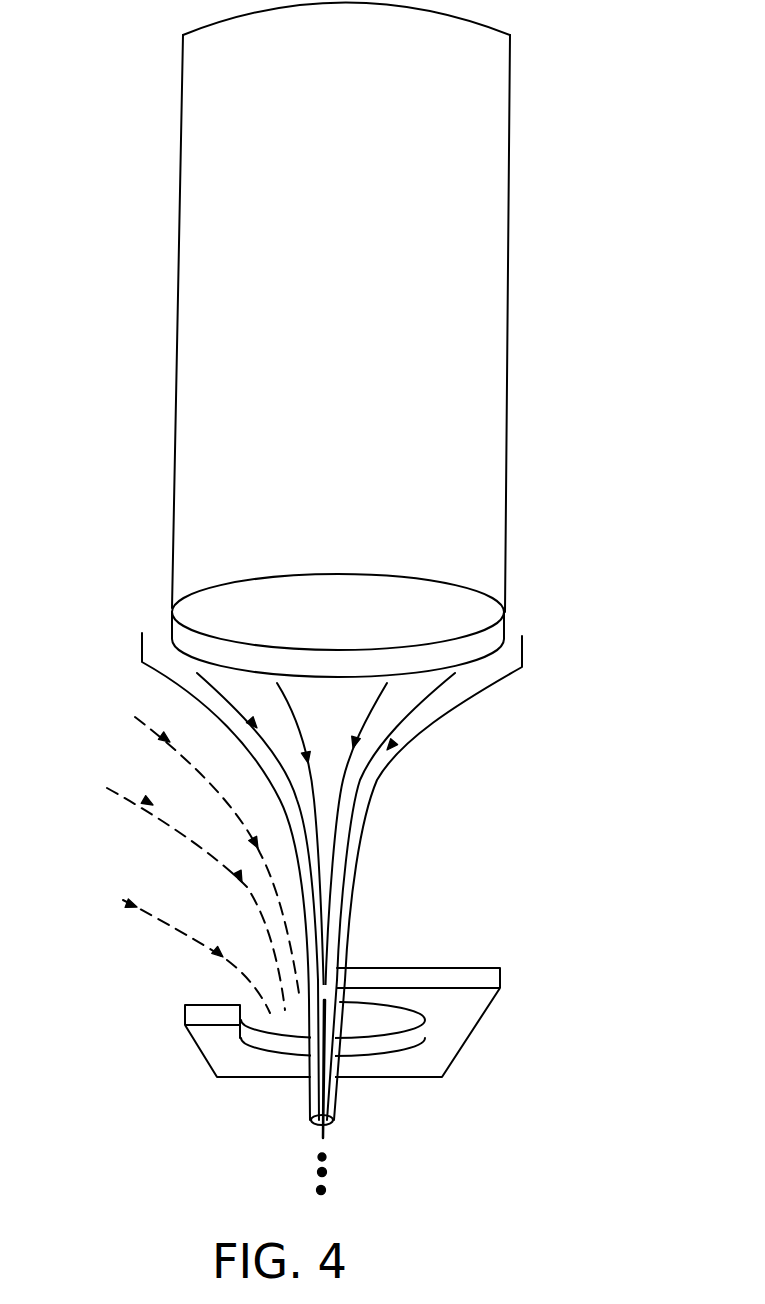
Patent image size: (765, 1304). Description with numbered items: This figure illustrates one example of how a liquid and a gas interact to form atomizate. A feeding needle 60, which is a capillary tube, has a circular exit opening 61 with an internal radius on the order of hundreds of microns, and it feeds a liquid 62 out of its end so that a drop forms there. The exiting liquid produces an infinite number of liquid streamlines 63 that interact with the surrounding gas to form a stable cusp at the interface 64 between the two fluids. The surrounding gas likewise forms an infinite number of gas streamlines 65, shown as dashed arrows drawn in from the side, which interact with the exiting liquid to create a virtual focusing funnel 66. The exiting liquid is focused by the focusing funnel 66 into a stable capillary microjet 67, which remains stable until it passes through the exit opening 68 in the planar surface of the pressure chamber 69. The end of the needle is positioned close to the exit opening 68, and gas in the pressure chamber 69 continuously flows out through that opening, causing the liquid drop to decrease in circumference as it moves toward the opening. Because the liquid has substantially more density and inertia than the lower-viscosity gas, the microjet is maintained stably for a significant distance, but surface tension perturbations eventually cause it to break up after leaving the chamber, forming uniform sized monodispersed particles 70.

The feeding needle 60 is at (506, 427).
The circular exit opening 61 is at (465, 620).
The liquid 62 is at (313, 608).
The liquid streamlines 63 is at (350, 787).
The interface 64 is at (365, 842).
The gas streamlines 65 is at (178, 823).
The virtual focusing funnel 66 is at (345, 932).
The stable capillary microjet 67 is at (343, 892).
The exit opening 68 is at (400, 1020).
The pressure chamber 69 is at (473, 967).
The monodispersed particles 70 is at (321, 1190).